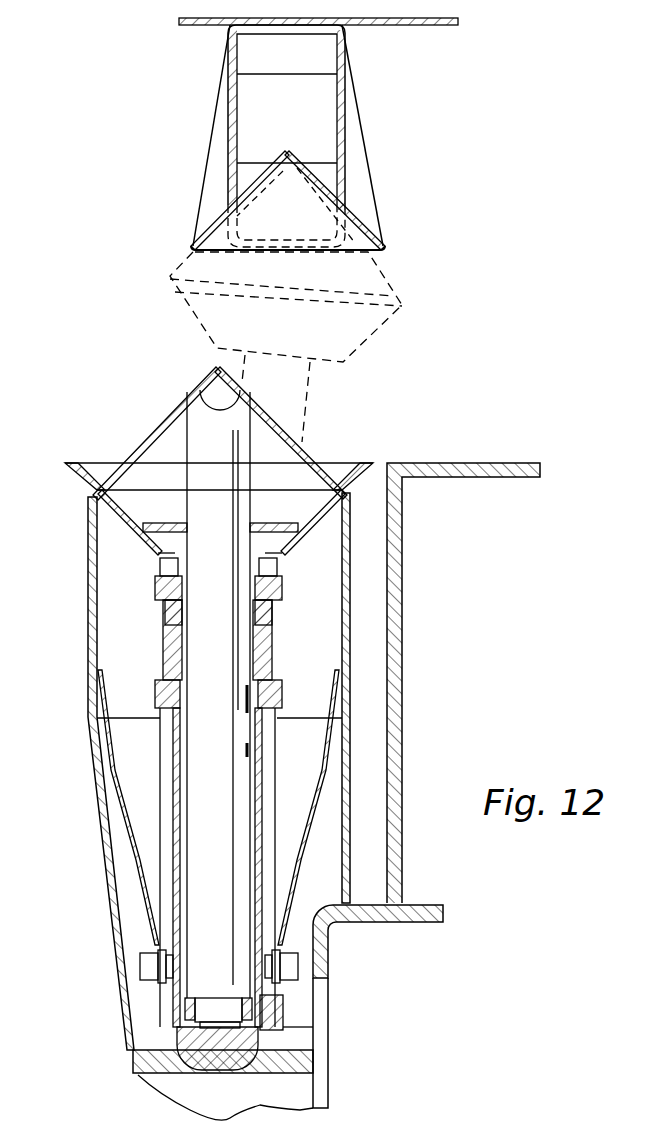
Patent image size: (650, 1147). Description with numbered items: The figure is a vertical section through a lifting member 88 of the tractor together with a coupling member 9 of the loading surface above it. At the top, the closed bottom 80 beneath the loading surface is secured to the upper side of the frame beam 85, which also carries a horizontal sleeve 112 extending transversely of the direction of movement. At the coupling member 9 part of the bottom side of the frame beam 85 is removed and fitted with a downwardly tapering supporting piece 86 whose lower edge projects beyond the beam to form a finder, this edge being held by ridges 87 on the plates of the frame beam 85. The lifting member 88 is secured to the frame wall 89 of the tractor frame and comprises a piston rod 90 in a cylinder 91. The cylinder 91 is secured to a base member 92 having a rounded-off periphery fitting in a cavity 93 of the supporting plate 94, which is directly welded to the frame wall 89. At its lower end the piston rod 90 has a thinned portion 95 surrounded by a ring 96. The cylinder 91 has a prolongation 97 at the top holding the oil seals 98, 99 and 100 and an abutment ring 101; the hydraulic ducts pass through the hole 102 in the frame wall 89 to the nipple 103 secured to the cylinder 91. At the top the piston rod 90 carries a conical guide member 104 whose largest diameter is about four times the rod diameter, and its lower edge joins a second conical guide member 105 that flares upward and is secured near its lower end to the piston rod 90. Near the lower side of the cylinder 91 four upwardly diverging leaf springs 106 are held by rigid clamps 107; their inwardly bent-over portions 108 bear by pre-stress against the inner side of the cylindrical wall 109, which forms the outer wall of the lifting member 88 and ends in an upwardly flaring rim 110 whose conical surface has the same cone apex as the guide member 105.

The coupling member 9 is at (195, 203).
The closed bottom 80 is at (445, 27).
The frame beam 85 is at (346, 90).
The supporting piece 86 is at (292, 165).
The ridges 87 is at (214, 150).
The lifting member 88 is at (98, 797).
The frame wall 89 is at (398, 557).
The piston rod 90 is at (300, 390).
The cylinder 91 is at (175, 757).
The base member 92 is at (220, 1062).
The cavity 93 is at (158, 1075).
The supporting plate 94 is at (283, 1072).
The thinned portion 95 is at (207, 996).
The ring 96 is at (190, 1010).
The prolongation 97 is at (160, 633).
The oil seal 98 is at (261, 684).
The oil seal 99 is at (273, 612).
The oil seal 100 is at (182, 558).
The abutment ring 101 is at (276, 590).
The hole 102 is at (328, 1010).
The nipple 103 is at (290, 1033).
The conical guide member 104 is at (393, 297).
The second conical guide member 105 is at (196, 324).
The leaf springs 106 is at (318, 792).
The rigid clamps 107 is at (140, 952).
The bent-over portions 108 is at (98, 717).
The cylindrical wall 109 is at (90, 612).
The upwardly flaring rim 110 is at (86, 482).
The horizontal sleeves 112 is at (285, 82).